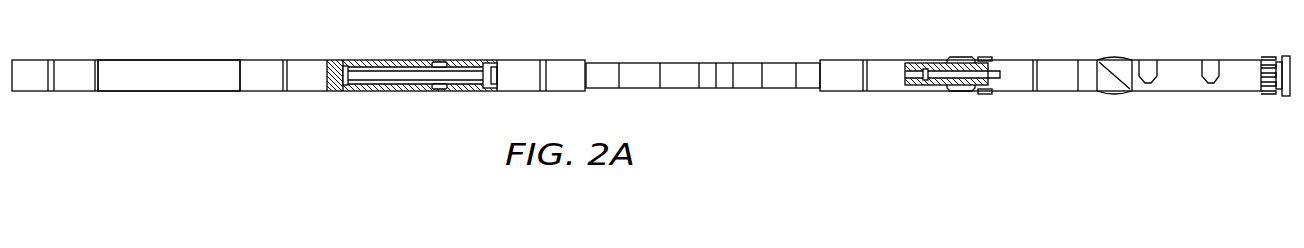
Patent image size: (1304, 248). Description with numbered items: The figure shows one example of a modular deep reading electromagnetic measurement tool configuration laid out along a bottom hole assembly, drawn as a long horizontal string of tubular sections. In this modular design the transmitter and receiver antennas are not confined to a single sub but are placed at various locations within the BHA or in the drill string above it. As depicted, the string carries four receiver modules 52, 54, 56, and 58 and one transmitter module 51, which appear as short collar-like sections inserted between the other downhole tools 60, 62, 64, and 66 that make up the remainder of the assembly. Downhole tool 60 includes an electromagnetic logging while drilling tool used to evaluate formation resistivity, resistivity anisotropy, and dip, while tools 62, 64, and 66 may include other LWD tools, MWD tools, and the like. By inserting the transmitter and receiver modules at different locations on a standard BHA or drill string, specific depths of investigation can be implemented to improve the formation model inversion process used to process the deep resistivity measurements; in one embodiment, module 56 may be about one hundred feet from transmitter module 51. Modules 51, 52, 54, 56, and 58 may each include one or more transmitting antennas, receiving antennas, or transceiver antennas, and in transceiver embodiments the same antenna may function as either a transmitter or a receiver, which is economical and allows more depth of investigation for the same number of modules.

The transmitter module 51 is at (1036, 60).
The receiver module 52 is at (866, 60).
The receiver module 54 is at (540, 60).
The receiver module 56 is at (283, 60).
The receiver module 58 is at (50, 60).
The downhole tool 60 is at (688, 89).
The downhole tool 62 is at (136, 92).
The downhole tool 64 is at (408, 92).
The downhole tool 66 is at (960, 93).